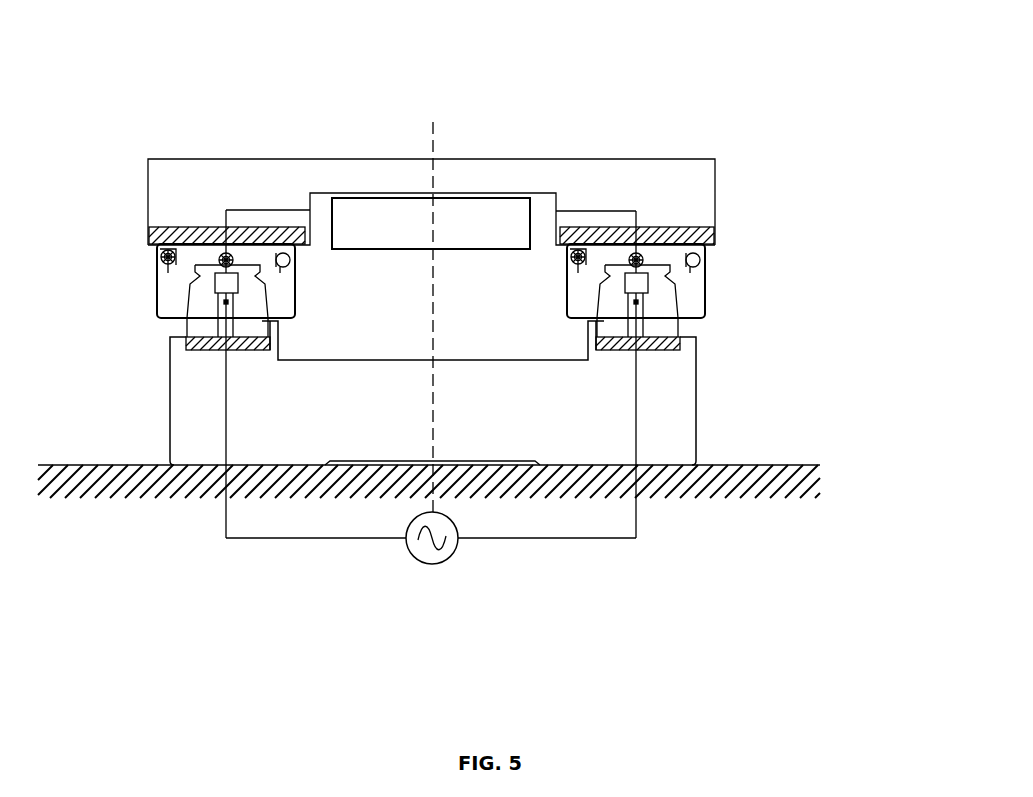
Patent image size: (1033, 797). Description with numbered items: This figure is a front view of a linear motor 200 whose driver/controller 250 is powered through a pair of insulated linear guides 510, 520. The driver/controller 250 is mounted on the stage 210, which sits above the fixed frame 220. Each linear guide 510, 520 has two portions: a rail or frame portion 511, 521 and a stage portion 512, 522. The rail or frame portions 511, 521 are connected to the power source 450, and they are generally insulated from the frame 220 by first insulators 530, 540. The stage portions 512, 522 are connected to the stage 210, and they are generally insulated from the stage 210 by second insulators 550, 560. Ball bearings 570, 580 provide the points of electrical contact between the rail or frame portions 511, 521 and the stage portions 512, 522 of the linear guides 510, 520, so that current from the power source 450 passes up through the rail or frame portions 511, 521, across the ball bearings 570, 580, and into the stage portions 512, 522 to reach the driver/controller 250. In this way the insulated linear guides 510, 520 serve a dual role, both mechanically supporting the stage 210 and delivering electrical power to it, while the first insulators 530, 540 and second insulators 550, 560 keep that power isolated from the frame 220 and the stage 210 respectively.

The linear motor 200 is at (503, 26).
The stage 210 is at (215, 188).
The driver/controller 250 is at (500, 220).
The second insulator 550 is at (685, 235).
The linear guide 510 is at (708, 283).
The stage portion 512 is at (693, 290).
The ball bearing 580 is at (670, 293).
The rail or frame portion 511 is at (660, 325).
The first insulator 530 is at (680, 348).
The frame 220 is at (672, 412).
The power source 450 is at (448, 552).
The second insulator 560 is at (155, 243).
The linear guide 520 is at (157, 272).
The stage portion 522 is at (172, 292).
The ball bearing 570 is at (193, 290).
The rail or frame portion 521 is at (203, 308).
The first insulator 540 is at (193, 347).